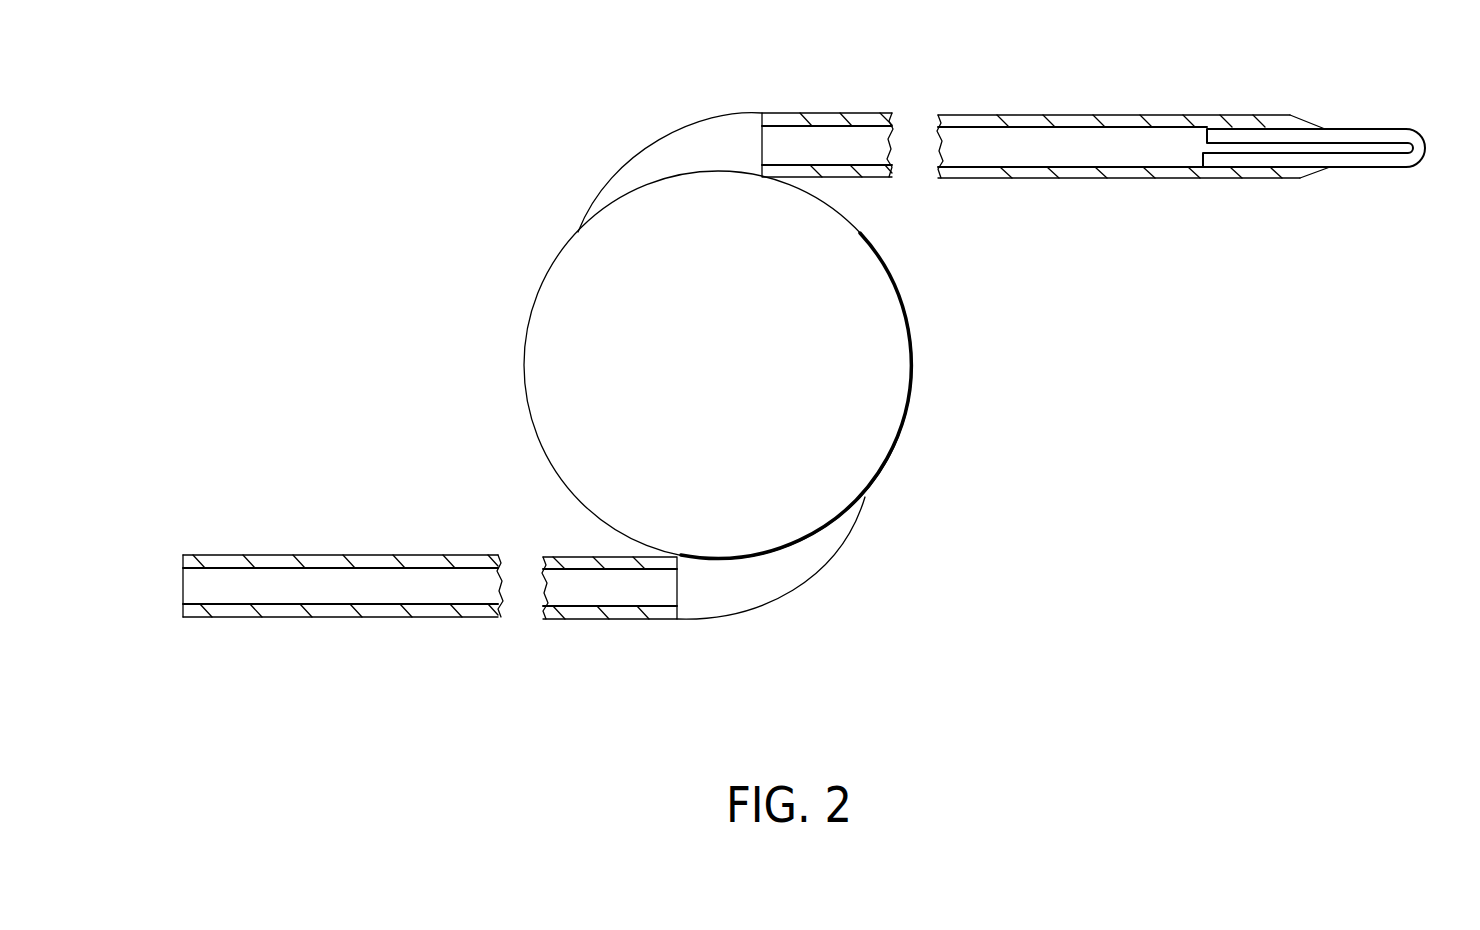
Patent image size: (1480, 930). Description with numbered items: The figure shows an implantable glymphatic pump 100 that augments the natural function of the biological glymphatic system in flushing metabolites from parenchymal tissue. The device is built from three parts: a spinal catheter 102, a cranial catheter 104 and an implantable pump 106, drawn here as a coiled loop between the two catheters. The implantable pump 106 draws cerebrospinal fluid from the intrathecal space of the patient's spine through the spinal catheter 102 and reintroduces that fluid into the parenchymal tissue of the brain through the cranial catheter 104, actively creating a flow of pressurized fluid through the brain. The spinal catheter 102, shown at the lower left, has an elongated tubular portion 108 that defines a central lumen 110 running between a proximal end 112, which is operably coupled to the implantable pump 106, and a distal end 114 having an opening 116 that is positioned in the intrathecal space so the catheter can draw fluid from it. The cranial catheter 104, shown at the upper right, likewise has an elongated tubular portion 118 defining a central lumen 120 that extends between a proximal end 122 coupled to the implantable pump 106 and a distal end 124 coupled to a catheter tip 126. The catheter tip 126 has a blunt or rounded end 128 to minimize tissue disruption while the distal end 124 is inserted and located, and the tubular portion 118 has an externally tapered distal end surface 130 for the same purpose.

The implantable glymphatic pump 100 is at (430, 150).
The spinal catheter 102 is at (367, 597).
The cranial catheter 104 is at (1061, 134).
The implantable pump 106 is at (570, 328).
The elongated tubular portion 108 is at (310, 562).
The central lumen 110 is at (258, 588).
The proximal end 112 is at (676, 616).
The distal end 114 is at (183, 556).
The opening 116 is at (183, 586).
The elongated tubular portion 118 is at (1000, 117).
The central lumen 120 is at (1083, 150).
The proximal end 122 is at (766, 115).
The distal end 124 is at (1280, 120).
The catheter tip 126 is at (1380, 164).
The blunt or rounded end 128 is at (1426, 136).
The externally tapered distal end surface 130 is at (1293, 176).